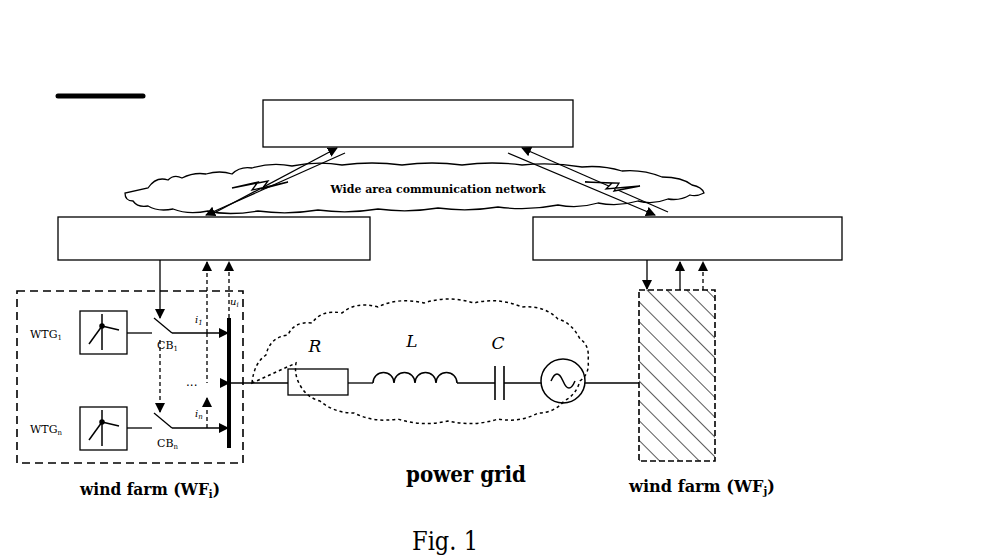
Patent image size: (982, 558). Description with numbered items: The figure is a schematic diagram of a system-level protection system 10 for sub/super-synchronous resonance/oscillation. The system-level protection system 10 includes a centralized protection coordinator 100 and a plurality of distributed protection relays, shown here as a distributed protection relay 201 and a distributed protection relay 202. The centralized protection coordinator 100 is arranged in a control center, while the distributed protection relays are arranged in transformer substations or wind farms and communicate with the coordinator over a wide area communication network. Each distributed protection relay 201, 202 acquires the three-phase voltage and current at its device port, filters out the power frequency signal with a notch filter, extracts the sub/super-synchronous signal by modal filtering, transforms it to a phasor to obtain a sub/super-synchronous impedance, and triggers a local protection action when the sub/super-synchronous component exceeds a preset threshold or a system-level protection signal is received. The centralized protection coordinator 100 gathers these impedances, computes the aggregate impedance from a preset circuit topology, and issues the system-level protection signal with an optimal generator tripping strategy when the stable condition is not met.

The system-level protection system 10 is at (100, 75).
The centralized protection coordinator 100 is at (517, 97).
The distributed protection relay 201 is at (127, 215).
The distributed protection relay 202 is at (760, 217).